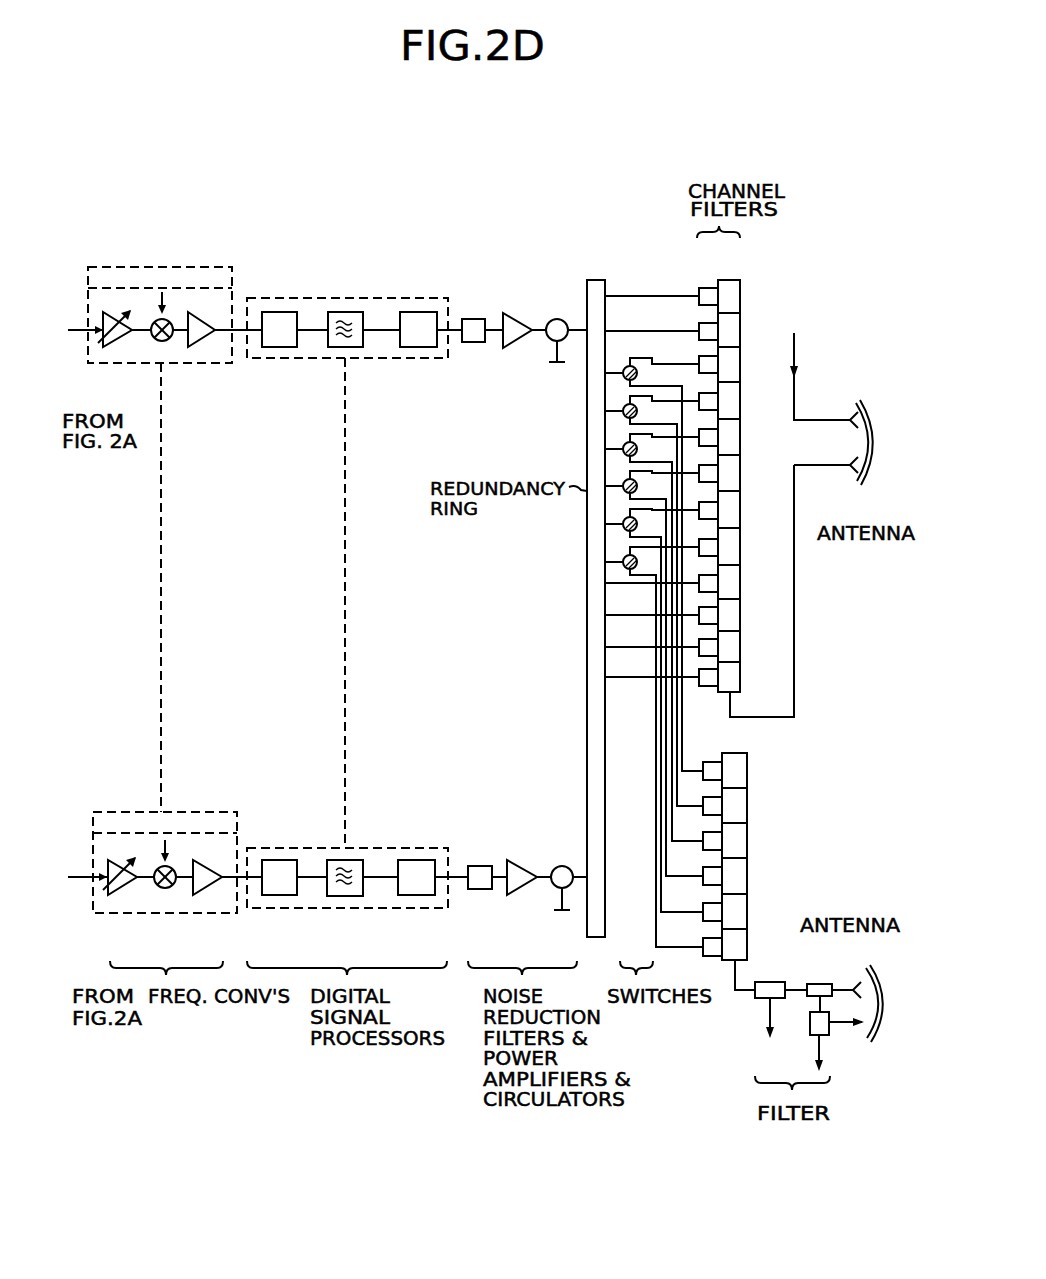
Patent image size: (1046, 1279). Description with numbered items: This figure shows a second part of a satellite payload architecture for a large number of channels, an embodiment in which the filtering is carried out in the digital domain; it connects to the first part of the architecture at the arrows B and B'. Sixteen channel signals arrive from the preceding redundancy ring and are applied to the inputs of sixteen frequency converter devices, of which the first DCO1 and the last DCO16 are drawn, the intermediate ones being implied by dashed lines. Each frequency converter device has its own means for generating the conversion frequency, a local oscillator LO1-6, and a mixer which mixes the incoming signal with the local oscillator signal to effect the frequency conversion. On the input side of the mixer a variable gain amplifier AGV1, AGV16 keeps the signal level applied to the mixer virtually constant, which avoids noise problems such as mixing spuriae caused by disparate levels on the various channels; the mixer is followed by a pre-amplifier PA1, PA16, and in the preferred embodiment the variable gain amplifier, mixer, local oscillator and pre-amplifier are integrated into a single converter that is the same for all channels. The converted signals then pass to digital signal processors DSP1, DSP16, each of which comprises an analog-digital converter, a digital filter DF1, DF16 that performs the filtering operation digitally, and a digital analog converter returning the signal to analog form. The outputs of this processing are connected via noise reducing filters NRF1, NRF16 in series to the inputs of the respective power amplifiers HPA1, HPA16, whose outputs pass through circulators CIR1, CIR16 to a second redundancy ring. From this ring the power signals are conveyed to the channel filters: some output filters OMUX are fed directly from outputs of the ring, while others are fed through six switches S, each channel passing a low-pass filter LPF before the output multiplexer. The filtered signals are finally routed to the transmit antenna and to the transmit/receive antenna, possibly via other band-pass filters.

The connection arrow B is at (83, 314).
The connection arrow B' is at (87, 863).
The frequency converter device DCO1 is at (190, 267).
The frequency converter device DCO16 is at (182, 812).
The local oscillator LO1-6 is at (162, 566).
The variable gain amplifier AGV1 is at (115, 337).
The variable gain amplifier AGV16 is at (119, 883).
The pre-amplifier PA1 is at (197, 340).
The pre-amplifier PA16 is at (205, 886).
The digital filter DF1 is at (343, 313).
The digital filter DF16 is at (350, 897).
The digital signal processor DSP1 is at (408, 360).
The digital signal processor DSP16 is at (372, 848).
The noise reducing filter NRF1 is at (474, 320).
The noise reducing filter NRF16 is at (478, 866).
The power amplifier HPA1 is at (515, 326).
The power amplifier HPA16 is at (518, 886).
The circulator CIR1 is at (557, 319).
The circulator CIR16 is at (562, 866).
The switch S is at (625, 366).
The low-pass filter LPF is at (706, 288).
The channel filters OMUX is at (730, 280).